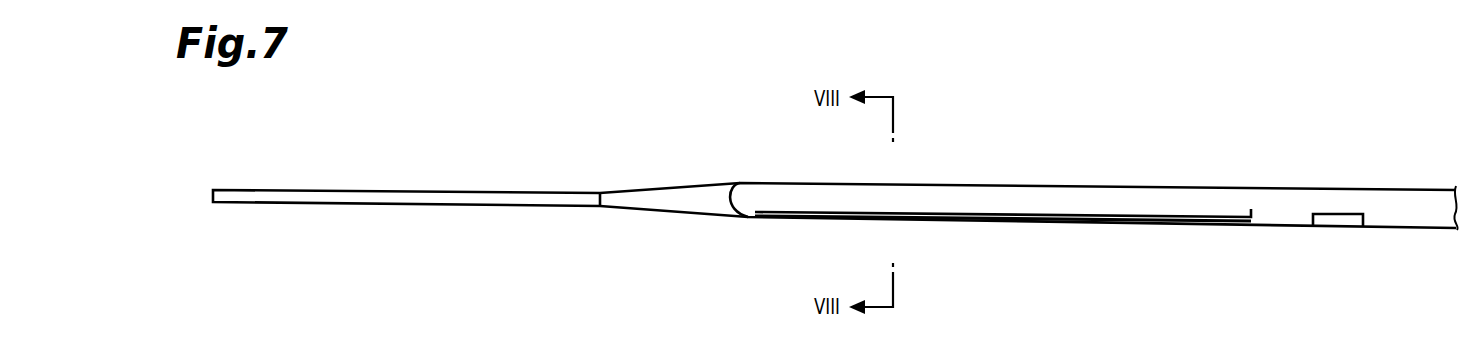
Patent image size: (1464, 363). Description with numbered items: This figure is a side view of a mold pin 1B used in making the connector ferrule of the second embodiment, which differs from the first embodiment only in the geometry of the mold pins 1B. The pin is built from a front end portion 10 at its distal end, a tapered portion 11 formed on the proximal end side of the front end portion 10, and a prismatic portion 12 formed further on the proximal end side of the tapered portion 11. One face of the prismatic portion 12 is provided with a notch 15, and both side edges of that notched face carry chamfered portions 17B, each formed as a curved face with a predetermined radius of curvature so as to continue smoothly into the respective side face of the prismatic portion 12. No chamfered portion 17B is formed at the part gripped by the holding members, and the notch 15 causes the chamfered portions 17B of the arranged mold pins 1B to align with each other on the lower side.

The front end portion 10 is at (420, 193).
The tapered portion 11 is at (660, 191).
The prismatic portion 12 is at (1045, 184).
The chamfered portion 17B is at (1127, 223).
The notch 15 is at (1340, 223).
The mold pin 1B is at (1204, 177).